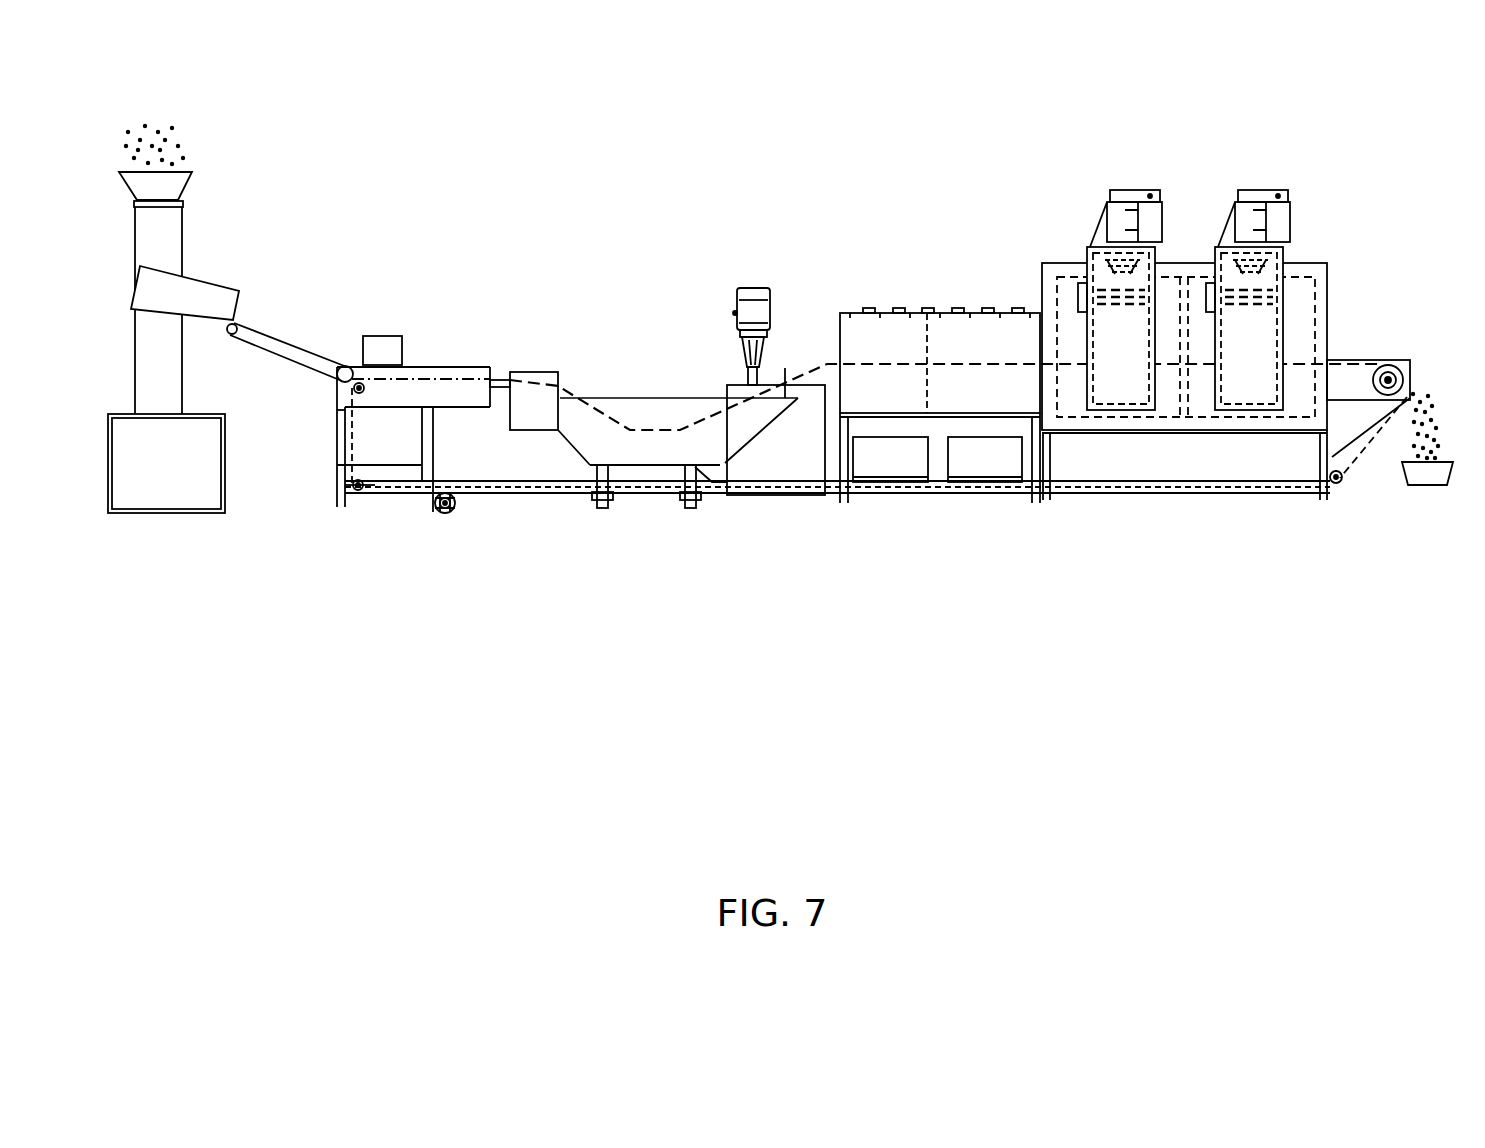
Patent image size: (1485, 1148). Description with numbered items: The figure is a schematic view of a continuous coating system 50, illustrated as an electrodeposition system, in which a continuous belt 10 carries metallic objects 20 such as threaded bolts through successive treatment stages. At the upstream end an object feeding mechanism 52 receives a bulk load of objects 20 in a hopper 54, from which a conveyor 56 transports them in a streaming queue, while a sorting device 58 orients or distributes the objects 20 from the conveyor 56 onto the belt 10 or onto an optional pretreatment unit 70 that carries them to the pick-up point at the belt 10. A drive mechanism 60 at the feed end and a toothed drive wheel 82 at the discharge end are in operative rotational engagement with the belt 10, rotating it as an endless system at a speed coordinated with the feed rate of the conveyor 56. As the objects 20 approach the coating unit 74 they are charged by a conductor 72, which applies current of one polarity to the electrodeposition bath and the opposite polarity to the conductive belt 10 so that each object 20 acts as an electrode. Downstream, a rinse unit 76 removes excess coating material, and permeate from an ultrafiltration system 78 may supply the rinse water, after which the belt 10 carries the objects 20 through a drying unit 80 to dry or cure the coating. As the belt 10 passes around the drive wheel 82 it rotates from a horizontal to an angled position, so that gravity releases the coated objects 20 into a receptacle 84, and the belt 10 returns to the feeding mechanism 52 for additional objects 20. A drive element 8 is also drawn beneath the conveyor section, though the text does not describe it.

The drive motor 8 is at (455, 513).
The continuous belt 10 is at (500, 380).
The objects 20 is at (160, 131).
The continuous coating system 50 is at (650, 272).
The object feeding mechanism 52 is at (287, 212).
The hopper 54 is at (178, 178).
The conveyor 56 is at (290, 337).
The sorting device 58 is at (190, 276).
The drive mechanism 60 is at (360, 395).
The pretreatment unit 70 is at (433, 363).
The conductor 72 is at (543, 370).
The coating unit 74 is at (688, 398).
The rinse unit 76 is at (975, 312).
The ultrafiltration system 78 is at (377, 335).
The drying unit 80 is at (1310, 262).
The drive wheel 82 is at (1388, 363).
The receptacle 84 is at (1422, 488).